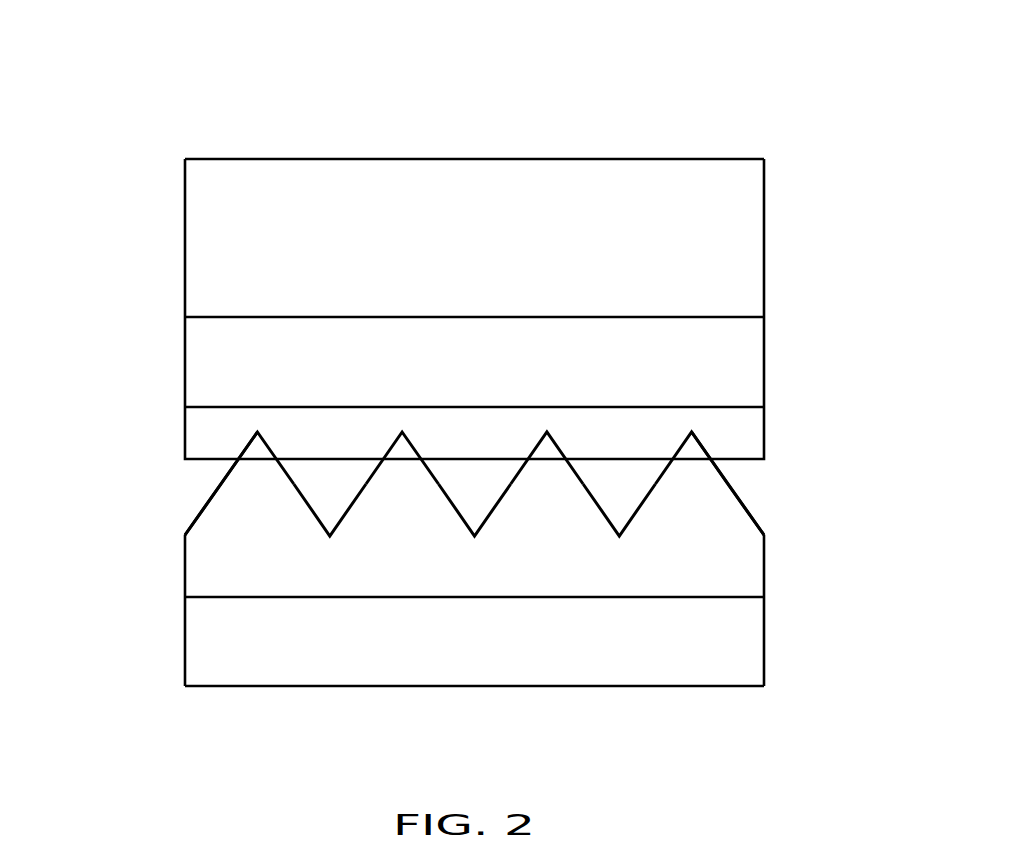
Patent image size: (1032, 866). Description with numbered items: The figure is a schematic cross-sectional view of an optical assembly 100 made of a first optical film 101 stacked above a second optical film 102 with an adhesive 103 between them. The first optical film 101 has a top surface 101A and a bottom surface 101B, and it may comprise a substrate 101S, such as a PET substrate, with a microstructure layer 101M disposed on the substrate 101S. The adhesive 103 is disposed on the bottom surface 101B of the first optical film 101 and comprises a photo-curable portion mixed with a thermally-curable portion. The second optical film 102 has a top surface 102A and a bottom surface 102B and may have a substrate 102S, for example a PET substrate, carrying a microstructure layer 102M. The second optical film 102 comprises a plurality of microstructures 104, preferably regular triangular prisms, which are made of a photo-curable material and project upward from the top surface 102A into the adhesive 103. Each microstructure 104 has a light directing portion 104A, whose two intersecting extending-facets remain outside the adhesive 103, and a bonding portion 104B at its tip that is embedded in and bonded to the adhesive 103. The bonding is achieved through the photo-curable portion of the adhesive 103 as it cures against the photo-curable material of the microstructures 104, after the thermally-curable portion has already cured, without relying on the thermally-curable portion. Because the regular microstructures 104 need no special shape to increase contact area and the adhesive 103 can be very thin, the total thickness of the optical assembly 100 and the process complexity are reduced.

The optical assembly 100 is at (898, 47).
The first optical film 101 is at (305, 262).
The top surface 101A is at (629, 157).
The bottom surface 101B is at (697, 405).
The microstructure layer 101M is at (218, 217).
The substrate 101S is at (222, 338).
The second optical film 102 is at (353, 642).
The top surface 102A is at (202, 508).
The bottom surface 102B is at (595, 688).
The microstructure layer 102M is at (218, 545).
The substrate 102S is at (217, 652).
The adhesive 103 is at (745, 449).
The microstructure 104 is at (740, 493).
The light directing portion 104A is at (692, 502).
The bonding portion 104B is at (694, 447).